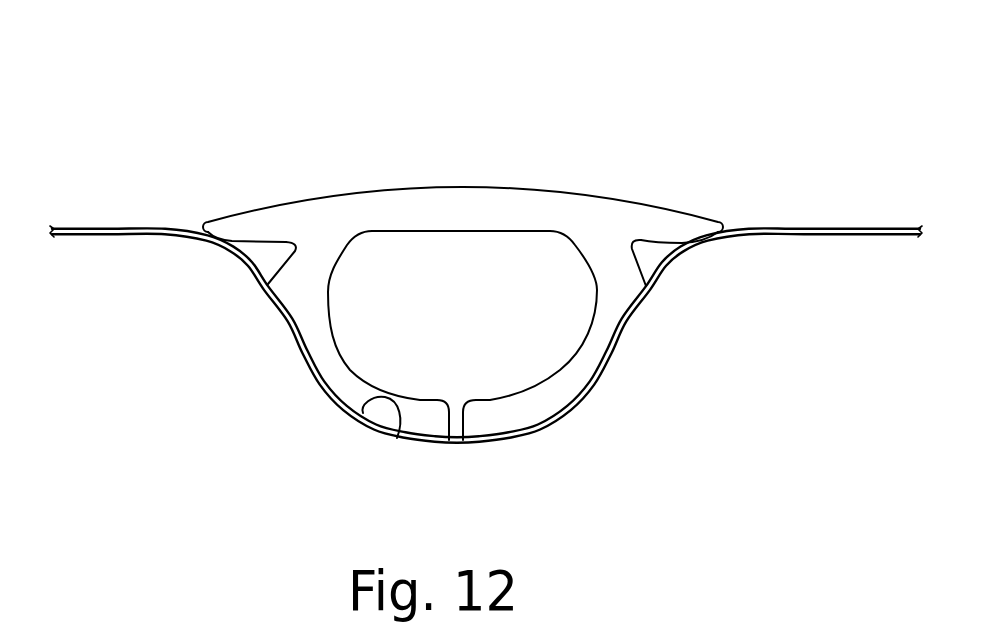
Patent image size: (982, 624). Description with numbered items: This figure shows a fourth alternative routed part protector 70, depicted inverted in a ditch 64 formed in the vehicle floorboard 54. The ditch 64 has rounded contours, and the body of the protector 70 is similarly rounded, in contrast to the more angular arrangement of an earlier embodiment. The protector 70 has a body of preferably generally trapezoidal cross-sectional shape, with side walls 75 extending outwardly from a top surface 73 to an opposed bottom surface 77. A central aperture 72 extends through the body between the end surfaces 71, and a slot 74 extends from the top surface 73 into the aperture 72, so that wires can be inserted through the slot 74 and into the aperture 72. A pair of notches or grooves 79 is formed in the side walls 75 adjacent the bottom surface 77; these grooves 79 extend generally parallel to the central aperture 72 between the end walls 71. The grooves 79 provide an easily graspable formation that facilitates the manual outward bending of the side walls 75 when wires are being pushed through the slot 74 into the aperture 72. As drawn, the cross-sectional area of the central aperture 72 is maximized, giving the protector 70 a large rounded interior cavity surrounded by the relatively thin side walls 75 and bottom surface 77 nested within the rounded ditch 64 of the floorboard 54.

The vehicle floorboard 54 is at (123, 228).
The ditch 64 is at (397, 438).
The routed part protector 70 is at (470, 150).
The end surfaces 71 is at (532, 207).
The central aperture 72 is at (328, 301).
The top surface 73 is at (449, 440).
The slot 74 is at (464, 440).
The side walls 75 is at (331, 396).
The bottom surface 77 is at (367, 192).
The notches or grooves 79 is at (294, 249).